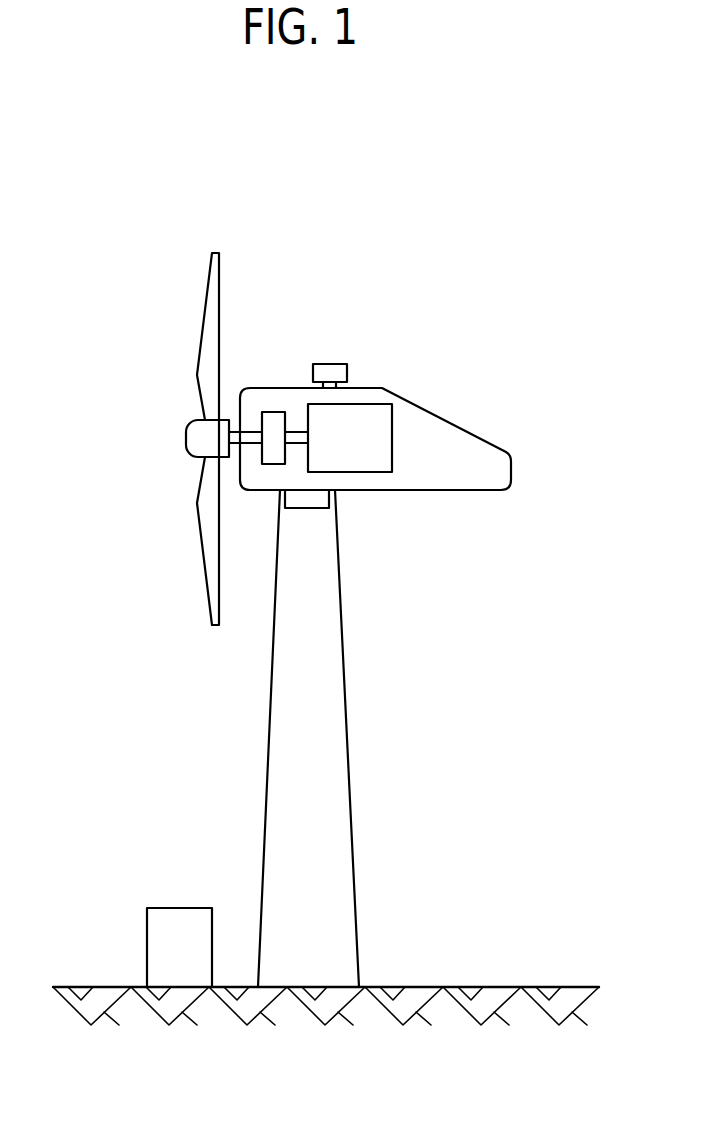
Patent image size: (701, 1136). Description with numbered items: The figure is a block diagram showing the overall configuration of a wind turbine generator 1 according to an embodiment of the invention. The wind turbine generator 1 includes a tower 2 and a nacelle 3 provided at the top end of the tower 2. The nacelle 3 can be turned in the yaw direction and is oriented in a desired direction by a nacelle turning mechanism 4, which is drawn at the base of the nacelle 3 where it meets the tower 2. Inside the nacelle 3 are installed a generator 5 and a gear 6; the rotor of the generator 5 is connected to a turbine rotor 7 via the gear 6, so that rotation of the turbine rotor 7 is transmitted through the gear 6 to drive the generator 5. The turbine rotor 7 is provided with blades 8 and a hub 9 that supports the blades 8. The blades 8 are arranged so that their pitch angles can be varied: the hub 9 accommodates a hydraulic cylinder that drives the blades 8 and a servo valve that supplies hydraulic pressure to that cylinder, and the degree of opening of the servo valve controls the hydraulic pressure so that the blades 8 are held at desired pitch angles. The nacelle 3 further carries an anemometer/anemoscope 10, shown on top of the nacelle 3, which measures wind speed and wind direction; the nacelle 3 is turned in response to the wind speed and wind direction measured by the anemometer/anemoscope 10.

The wind turbine generator 1 is at (376, 275).
The tower 2 is at (347, 778).
The nacelle 3 is at (462, 427).
The nacelle turning mechanism 4 is at (307, 508).
The generator 5 is at (370, 404).
The gear 6 is at (275, 412).
The turbine rotor 7 is at (134, 439).
The blades 8 is at (202, 317).
The hub 9 is at (186, 438).
The anemometer/anemoscope 10 is at (332, 364).